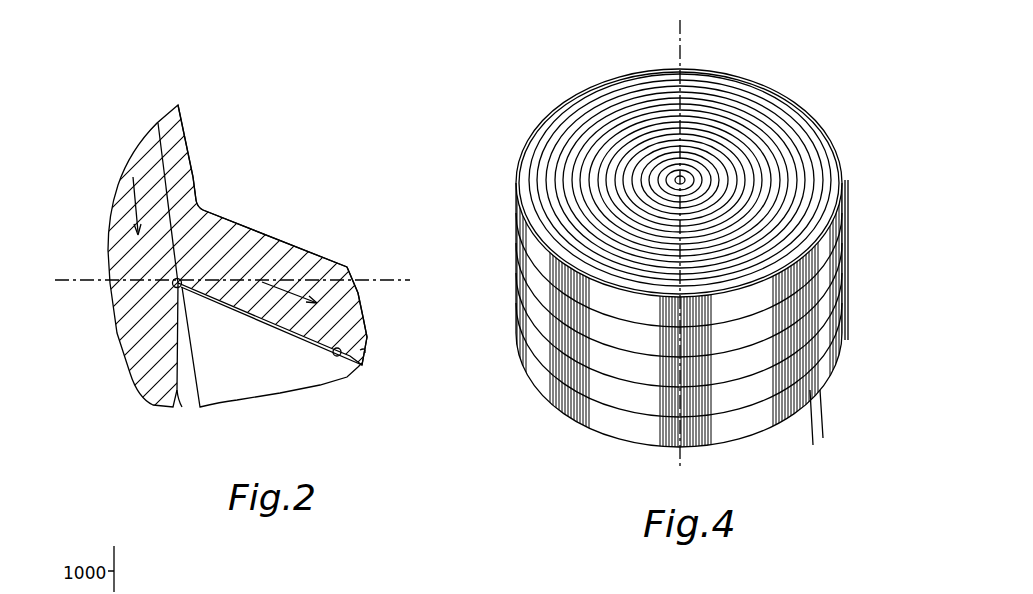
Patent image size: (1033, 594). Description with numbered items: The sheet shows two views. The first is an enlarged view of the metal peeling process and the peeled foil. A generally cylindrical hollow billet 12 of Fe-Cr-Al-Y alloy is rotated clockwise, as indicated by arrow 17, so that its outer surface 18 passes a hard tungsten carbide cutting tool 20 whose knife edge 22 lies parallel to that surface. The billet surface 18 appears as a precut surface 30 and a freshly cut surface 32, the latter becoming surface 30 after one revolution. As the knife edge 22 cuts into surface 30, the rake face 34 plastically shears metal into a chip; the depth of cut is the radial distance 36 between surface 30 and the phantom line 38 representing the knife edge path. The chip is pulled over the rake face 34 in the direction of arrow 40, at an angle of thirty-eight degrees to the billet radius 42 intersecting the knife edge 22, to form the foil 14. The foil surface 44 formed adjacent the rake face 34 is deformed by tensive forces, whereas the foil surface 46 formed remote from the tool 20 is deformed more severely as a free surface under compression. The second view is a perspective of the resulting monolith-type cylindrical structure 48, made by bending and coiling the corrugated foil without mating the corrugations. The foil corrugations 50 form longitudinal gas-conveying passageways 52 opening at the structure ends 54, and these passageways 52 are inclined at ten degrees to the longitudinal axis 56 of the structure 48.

In FIG. 2, the billet 12 is at (140, 338).
In FIG. 2, the foil 14 is at (355, 305).
In FIG. 2, the arrow 17 is at (133, 200).
In FIG. 2, the billet outer surface 18 is at (190, 152).
In FIG. 2, the cutting tool 20 is at (285, 403).
In FIG. 2, the knife edge 22 is at (183, 301).
In FIG. 2, the precut surface 30 is at (196, 176).
In FIG. 2, the freshly cut surface 32 is at (180, 394).
In FIG. 2, the rake face 34 is at (213, 291).
In FIG. 2, the radial distance 36 is at (164, 142).
In FIG. 2, the phantom line 38 is at (158, 136).
In FIG. 2, the arrow 40 is at (298, 295).
In FIG. 2, the billet radius 42 is at (88, 276).
In FIG. 2, the foil surface 44 is at (365, 337).
In FIG. 2, the foil surface 46 is at (253, 236).
In FIG. 4, the cylindrical structure 48 is at (560, 428).
In FIG. 4, the foil corrugations 50 is at (822, 430).
In FIG. 4, the passageways 52 is at (838, 162).
In FIG. 4, the foil structure ends 54 is at (797, 127).
In FIG. 4, the longitudinal axis 56 is at (683, 53).